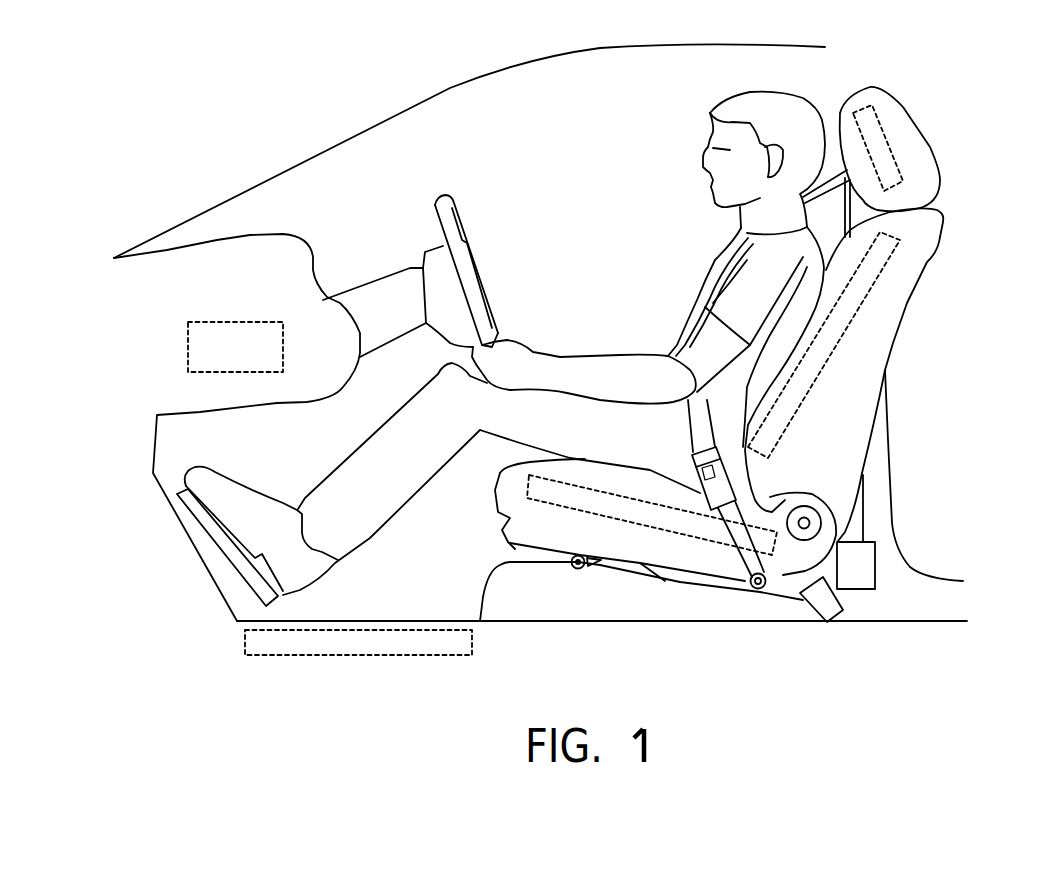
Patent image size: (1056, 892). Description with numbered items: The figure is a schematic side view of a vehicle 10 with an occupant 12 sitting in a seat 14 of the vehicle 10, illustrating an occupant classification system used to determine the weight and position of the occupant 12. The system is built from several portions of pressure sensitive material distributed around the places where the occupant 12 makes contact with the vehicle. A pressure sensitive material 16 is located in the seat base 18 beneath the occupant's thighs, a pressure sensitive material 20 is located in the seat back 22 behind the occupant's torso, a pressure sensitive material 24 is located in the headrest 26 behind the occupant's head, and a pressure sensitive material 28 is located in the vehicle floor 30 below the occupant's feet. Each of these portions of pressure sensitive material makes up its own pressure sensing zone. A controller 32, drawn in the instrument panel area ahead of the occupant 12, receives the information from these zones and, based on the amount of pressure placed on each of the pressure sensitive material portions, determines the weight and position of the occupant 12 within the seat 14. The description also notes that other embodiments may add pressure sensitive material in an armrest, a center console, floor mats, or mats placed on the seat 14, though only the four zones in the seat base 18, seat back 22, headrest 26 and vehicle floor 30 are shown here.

The vehicle 10 is at (230, 108).
The occupant 12 is at (640, 367).
The seat 14 is at (892, 342).
The pressure sensitive material 16 is at (620, 517).
The seat base 18 is at (530, 530).
The pressure sensitive material 20 is at (812, 370).
The seat back 22 is at (847, 402).
The pressure sensitive material 24 is at (877, 145).
The headrest 26 is at (927, 183).
The pressure sensitive material 28 is at (367, 643).
The vehicle floor 30 is at (455, 701).
The controller 32 is at (238, 340).